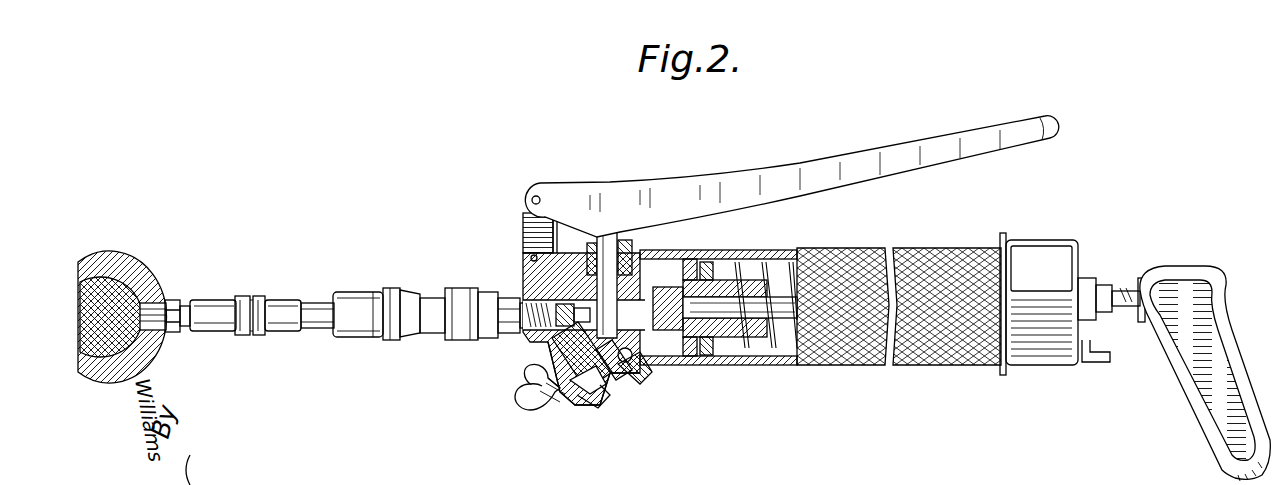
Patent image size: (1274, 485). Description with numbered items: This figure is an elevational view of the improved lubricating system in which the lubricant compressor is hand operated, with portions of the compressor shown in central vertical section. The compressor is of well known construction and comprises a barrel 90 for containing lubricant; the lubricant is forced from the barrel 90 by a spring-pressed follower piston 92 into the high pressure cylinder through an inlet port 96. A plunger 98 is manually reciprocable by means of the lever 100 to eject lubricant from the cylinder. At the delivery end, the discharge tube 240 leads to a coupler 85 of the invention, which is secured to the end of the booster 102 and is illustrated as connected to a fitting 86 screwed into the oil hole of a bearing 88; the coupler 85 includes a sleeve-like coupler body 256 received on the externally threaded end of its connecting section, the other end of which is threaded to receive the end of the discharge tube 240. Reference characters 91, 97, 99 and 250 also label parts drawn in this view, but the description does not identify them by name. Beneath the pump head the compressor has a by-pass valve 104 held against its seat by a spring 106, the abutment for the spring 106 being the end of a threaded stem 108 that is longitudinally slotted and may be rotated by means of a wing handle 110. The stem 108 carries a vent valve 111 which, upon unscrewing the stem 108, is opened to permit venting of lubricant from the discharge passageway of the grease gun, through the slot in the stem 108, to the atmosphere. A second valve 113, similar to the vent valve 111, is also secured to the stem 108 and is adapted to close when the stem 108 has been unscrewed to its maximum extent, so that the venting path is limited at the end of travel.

The coupler 85 is at (242, 338).
The fitting 86 is at (178, 305).
The bearing 88 is at (128, 275).
The barrel 90 is at (838, 254).
The pump head 91 is at (533, 283).
The follower piston 92 is at (702, 268).
The inlet port 96 is at (643, 290).
The coupling nut 97 is at (472, 290).
The plunger 98 is at (600, 255).
The nut 99 is at (518, 333).
The lever 100 is at (983, 150).
The booster 102 is at (367, 287).
The by-pass valve 104 is at (640, 378).
The spring 106 is at (622, 380).
The threaded stem 108 is at (582, 405).
The wing handle 110 is at (533, 425).
The vent valve 111 is at (555, 383).
The valve 113 is at (612, 363).
The discharge tube 240 is at (325, 330).
The pipe 250 is at (281, 300).
The coupler body 256 is at (220, 334).